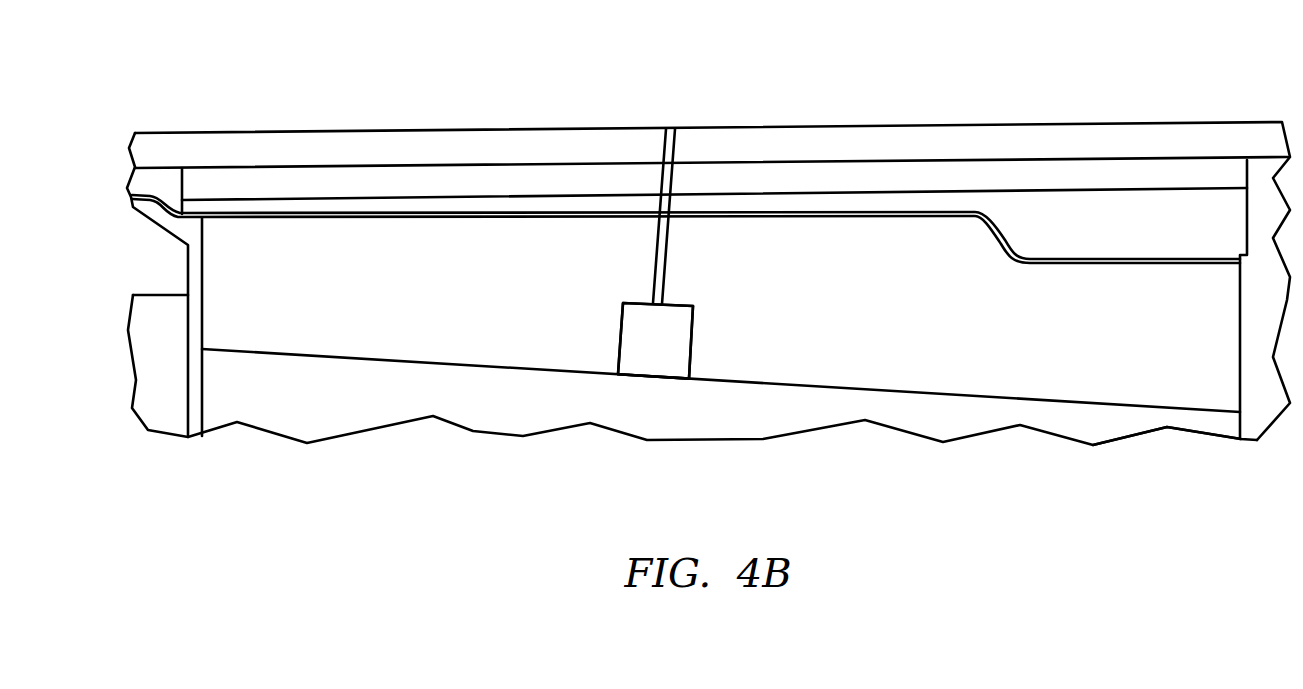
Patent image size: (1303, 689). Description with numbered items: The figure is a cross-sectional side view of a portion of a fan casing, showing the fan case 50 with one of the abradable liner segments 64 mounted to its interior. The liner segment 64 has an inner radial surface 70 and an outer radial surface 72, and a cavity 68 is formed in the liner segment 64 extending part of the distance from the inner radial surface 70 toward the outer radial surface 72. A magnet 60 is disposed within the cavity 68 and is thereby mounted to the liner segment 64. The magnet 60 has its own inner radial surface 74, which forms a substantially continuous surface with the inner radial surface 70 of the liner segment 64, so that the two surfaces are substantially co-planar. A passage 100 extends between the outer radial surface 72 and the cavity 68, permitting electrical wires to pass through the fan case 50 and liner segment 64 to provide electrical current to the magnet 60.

The fan case 50 is at (913, 77).
The outer radial surface 72 is at (612, 216).
The passages 100 is at (663, 249).
The cavity 68 is at (693, 330).
The magnets 60 is at (678, 347).
The inner radial surface 70 is at (585, 368).
The inner radial surface 74 is at (603, 376).
The abradable liner segments 64 is at (1110, 390).